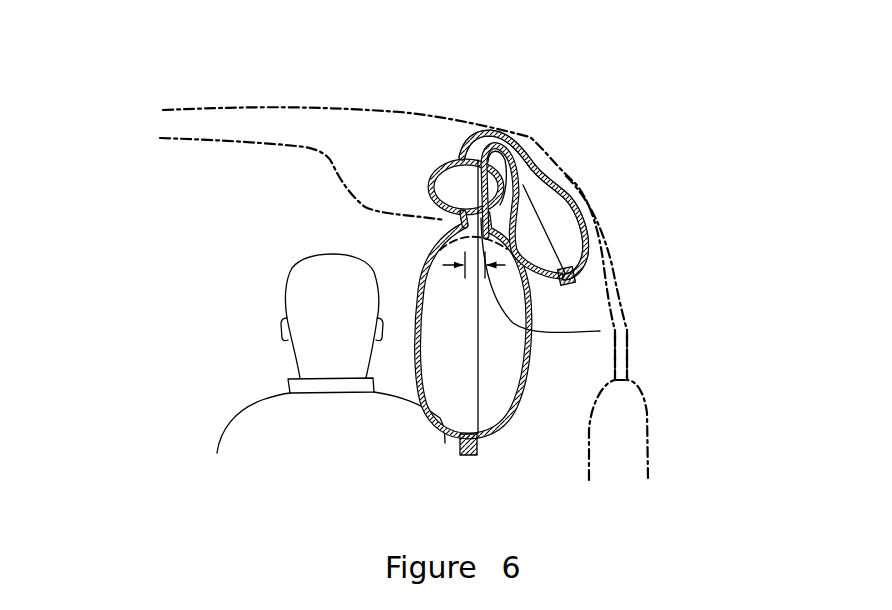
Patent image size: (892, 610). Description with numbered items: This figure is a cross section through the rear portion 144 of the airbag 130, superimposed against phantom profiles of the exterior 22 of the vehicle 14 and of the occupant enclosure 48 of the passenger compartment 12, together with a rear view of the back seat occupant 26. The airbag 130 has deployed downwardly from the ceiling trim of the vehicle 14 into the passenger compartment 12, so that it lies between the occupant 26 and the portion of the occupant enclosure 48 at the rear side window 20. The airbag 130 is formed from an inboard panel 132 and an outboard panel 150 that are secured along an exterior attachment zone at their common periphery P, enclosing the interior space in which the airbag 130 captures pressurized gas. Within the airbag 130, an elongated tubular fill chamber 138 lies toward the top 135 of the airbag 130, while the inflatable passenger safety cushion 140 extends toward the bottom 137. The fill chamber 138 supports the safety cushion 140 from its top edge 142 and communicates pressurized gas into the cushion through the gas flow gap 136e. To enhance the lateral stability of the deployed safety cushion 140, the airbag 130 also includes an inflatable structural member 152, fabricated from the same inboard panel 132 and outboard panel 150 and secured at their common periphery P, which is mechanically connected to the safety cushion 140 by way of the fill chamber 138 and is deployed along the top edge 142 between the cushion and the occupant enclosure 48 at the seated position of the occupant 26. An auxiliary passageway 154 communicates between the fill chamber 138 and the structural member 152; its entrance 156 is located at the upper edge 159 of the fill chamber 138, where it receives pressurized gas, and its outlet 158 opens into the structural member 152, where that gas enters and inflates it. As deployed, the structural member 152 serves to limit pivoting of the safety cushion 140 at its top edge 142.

The passenger compartment 12 is at (221, 272).
The vehicle 14 is at (141, 82).
The rear side window 20 is at (637, 356).
The exterior 22 is at (298, 99).
The back seat occupant 26 is at (319, 315).
The occupant enclosure 48 is at (326, 163).
The airbag 130 is at (276, 180).
The inboard panel 132 is at (469, 127).
The top 135 is at (440, 170).
The gas flow gap 136e is at (533, 165).
The bottom 137 is at (440, 388).
The fill chamber 138 is at (460, 188).
The inflatable passenger safety cushion 140 is at (445, 285).
The top edge 142 is at (440, 250).
The rear portion 144 is at (413, 370).
The outboard panel 150 is at (482, 450).
The inflatable structural member 152 is at (582, 203).
The auxiliary passageway 154 is at (505, 135).
The entrance 156 is at (512, 158).
The outlet 158 is at (547, 210).
The upper edge 159 is at (459, 157).
The periphery P is at (474, 336).